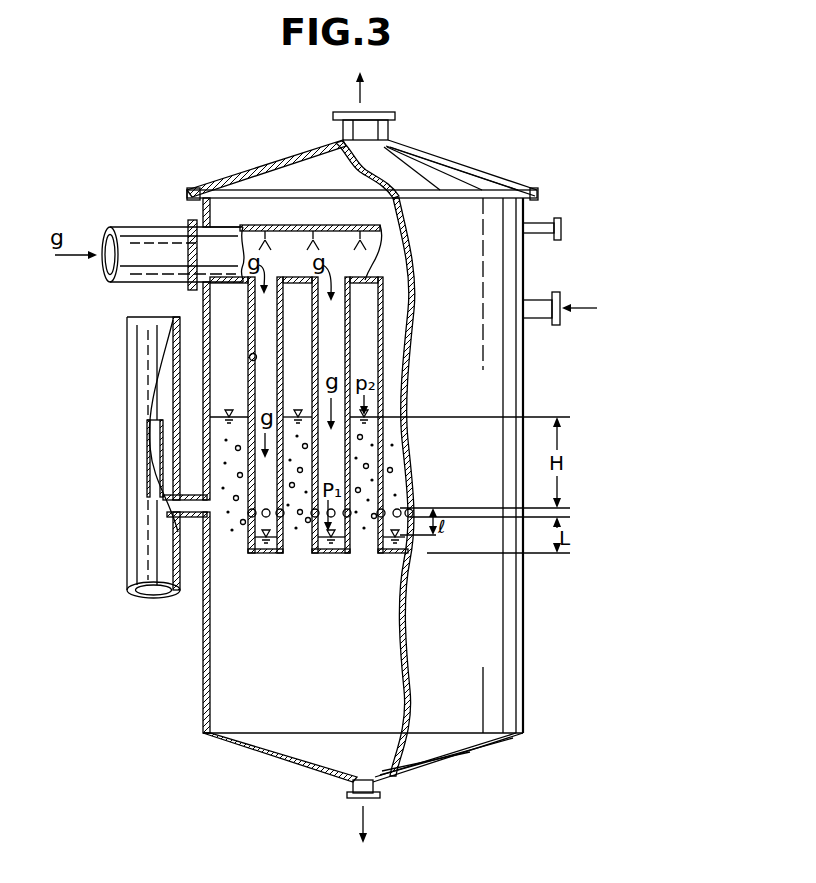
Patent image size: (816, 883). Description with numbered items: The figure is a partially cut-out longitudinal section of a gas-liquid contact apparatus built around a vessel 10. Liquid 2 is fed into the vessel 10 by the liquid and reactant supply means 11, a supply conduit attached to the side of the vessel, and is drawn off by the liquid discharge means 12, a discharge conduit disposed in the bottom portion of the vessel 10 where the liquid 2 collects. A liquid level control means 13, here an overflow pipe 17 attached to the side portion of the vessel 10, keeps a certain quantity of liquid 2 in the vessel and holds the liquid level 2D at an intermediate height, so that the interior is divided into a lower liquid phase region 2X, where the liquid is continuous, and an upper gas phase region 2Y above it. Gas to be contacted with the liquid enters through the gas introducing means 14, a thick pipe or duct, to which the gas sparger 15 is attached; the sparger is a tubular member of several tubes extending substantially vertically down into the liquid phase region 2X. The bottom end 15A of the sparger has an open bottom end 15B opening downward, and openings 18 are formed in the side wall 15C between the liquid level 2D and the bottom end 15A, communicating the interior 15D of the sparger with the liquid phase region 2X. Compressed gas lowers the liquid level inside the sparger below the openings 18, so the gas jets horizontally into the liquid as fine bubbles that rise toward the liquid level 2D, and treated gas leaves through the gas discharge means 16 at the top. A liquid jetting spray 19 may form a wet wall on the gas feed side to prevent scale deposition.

The vessel 10 is at (533, 367).
The liquid and reactant supply means 11 is at (545, 297).
The liquid discharge means 12 is at (379, 791).
The liquid level control means 13 is at (127, 488).
The gas introducing means 14 is at (226, 240).
The gas sparger 15 is at (247, 320).
The bottom end 15A is at (283, 556).
The open bottom end 15B is at (262, 556).
The side wall 15C is at (247, 535).
The interior 15D is at (249, 357).
The gas discharge means 16 is at (343, 128).
The overflow pipe 17 is at (153, 433).
The openings 18 is at (341, 520).
The liquid jetting spray 19 is at (538, 226).
The liquid 2 is at (230, 418).
The liquid level 2D is at (302, 414).
The liquid phase region 2X is at (293, 680).
The gas phase region 2Y is at (376, 353).